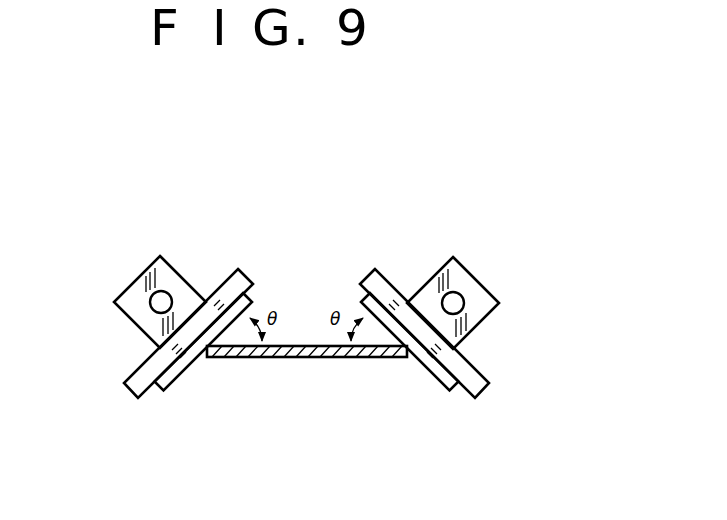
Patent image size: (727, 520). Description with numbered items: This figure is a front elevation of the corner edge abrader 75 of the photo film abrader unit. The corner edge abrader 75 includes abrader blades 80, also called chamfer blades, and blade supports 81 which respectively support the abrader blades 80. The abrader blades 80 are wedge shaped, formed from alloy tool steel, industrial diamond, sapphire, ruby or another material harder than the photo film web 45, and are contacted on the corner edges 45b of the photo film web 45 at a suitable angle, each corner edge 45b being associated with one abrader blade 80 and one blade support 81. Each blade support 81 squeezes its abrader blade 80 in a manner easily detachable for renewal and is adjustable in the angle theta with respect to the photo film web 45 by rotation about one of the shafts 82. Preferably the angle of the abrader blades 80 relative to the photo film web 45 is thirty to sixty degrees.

The corner edge abrader 75 is at (345, 226).
The blade support 81 is at (160, 257).
The shaft 82 is at (157, 292).
The abrader blade 80 is at (170, 386).
The corner edge 45b is at (208, 349).
The photo film web 45 is at (296, 360).